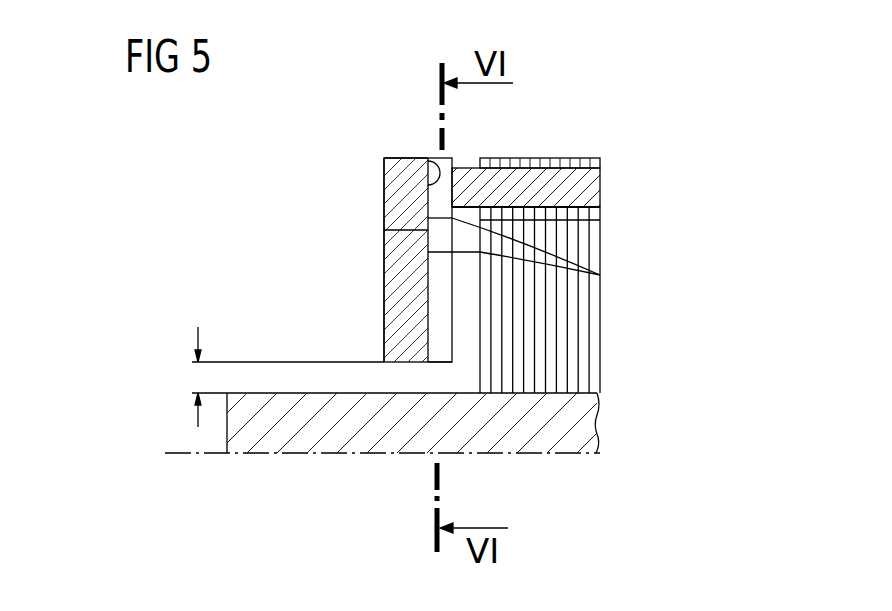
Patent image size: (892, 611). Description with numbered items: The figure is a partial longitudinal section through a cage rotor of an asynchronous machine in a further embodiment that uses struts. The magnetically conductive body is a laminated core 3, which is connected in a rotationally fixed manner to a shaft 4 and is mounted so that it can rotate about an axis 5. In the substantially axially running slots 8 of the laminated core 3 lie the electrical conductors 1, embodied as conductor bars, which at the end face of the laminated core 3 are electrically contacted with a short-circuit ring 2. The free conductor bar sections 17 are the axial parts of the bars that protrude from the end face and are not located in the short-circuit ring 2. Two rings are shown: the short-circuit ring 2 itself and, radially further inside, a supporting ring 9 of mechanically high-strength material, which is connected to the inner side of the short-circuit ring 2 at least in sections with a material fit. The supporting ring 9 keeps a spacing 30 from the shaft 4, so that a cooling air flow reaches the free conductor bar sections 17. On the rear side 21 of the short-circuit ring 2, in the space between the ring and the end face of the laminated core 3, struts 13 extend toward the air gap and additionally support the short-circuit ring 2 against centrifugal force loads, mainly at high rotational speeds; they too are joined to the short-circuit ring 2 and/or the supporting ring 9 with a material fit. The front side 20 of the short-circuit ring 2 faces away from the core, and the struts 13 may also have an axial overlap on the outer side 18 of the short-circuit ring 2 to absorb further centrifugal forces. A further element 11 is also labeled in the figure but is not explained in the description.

The electrical conductors 1 is at (606, 185).
The short-circuit ring 2 is at (412, 179).
The laminated core 3 is at (580, 345).
The shaft 4 is at (377, 448).
The axis 5 is at (182, 454).
The slots 8 is at (540, 157).
The supporting ring 9 is at (384, 288).
The joint 11 is at (384, 232).
The struts 13 is at (428, 332).
The free conductor bar sections 17 is at (600, 219).
The outer side of the short-circuit ring 18 is at (385, 157).
The front side of the short-circuit ring 20 is at (386, 210).
The rear side of the short-circuit ring 21 is at (434, 158).
The spacing 30 is at (198, 377).